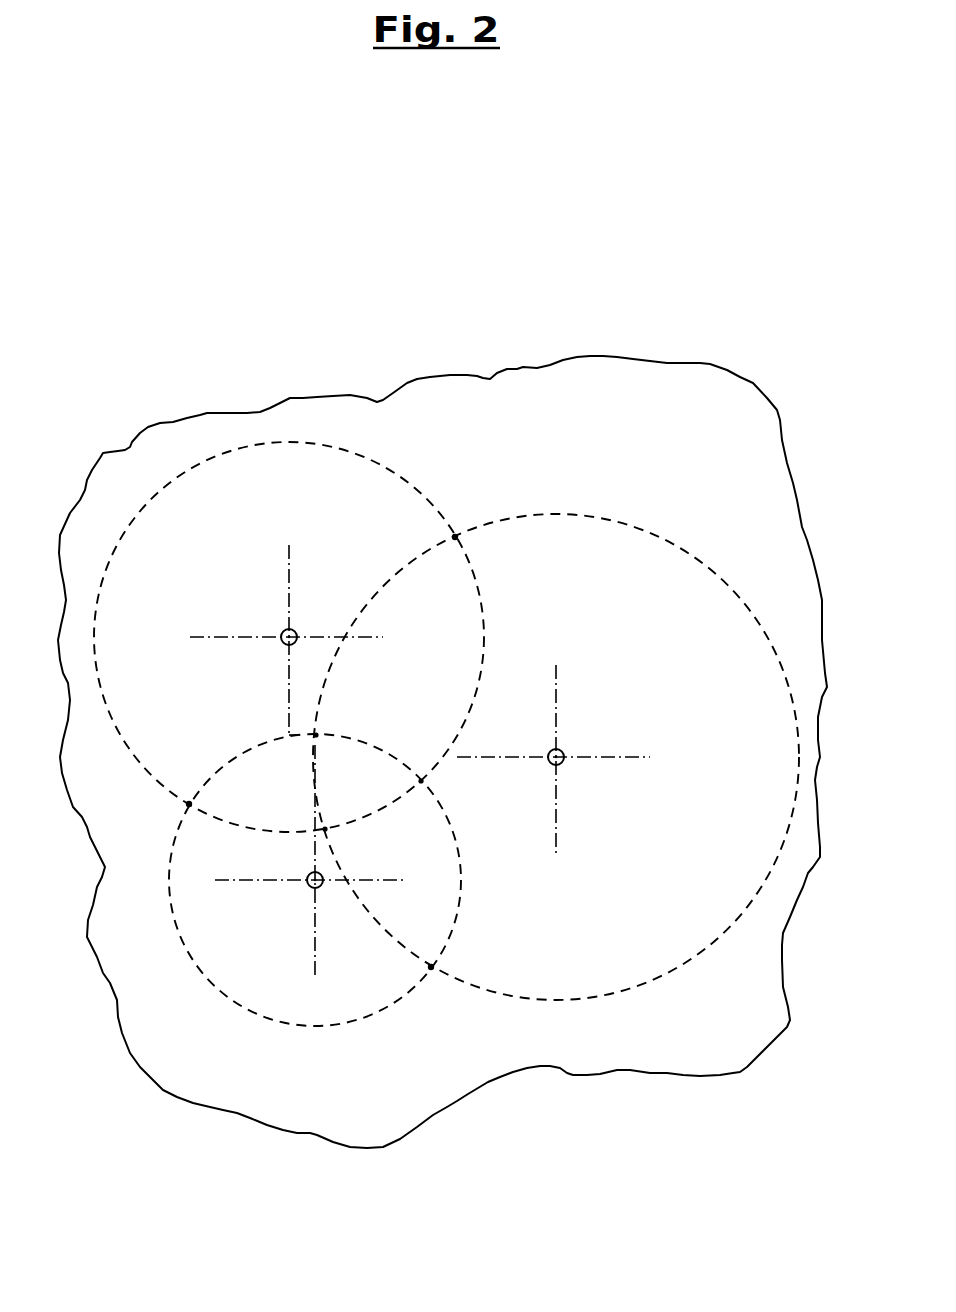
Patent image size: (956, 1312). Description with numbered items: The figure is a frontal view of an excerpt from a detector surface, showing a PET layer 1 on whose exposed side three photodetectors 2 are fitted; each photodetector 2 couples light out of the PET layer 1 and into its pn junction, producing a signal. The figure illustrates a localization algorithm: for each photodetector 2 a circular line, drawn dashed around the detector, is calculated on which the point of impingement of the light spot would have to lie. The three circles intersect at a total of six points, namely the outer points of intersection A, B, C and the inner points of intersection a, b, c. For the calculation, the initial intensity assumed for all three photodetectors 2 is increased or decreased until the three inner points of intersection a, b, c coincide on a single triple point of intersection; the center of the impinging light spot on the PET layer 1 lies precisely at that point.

The PET layer 1 is at (645, 1030).
The photodetector 2 is at (420, 761).
The outer point of intersection A is at (177, 808).
The outer point of intersection B is at (460, 524).
The outer point of intersection C is at (432, 981).
The inner point of intersection a is at (309, 725).
The inner point of intersection b is at (421, 768).
The inner point of intersection c is at (330, 817).